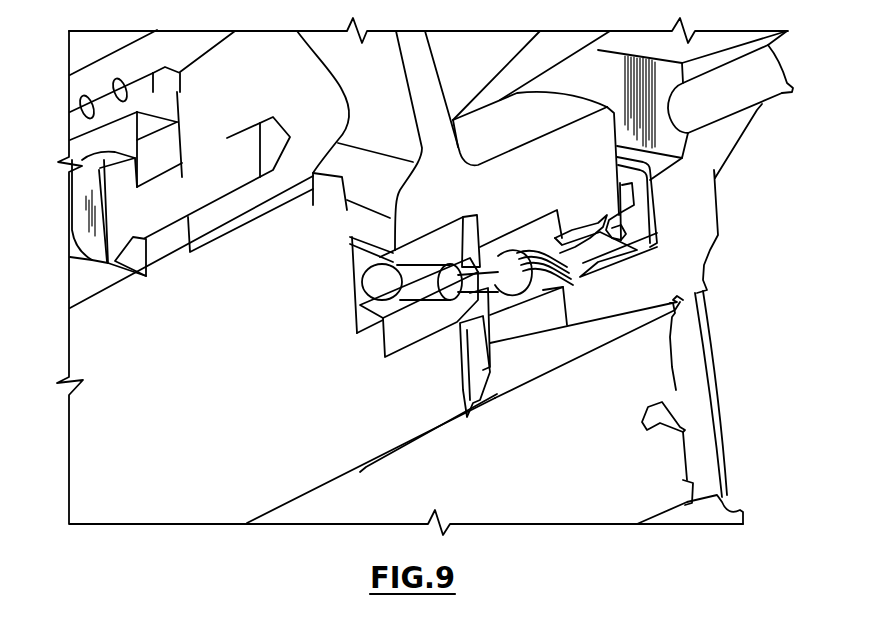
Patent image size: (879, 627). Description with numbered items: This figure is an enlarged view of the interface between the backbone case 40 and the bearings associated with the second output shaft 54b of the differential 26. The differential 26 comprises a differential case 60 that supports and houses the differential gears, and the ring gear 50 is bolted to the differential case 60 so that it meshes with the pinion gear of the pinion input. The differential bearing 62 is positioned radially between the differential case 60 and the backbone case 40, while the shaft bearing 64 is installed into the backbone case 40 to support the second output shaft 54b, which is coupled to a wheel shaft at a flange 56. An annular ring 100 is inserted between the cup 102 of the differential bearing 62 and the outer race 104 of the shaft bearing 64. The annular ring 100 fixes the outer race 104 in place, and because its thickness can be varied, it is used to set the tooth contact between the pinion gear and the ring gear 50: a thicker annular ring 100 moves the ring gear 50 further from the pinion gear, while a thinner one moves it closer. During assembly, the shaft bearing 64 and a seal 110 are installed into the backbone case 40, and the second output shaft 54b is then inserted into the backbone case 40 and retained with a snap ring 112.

The differential 26 is at (405, 276).
The ring gear 50 is at (249, 115).
The backbone case 40 is at (499, 144).
The flange 56 is at (707, 105).
The annular ring 100 is at (470, 215).
The seal 110 is at (635, 236).
The cup 102 is at (365, 281).
The outer race 104 is at (547, 287).
The second output shaft 54b is at (708, 407).
The differential bearing 62 is at (410, 327).
The snap ring 112 is at (443, 352).
The shaft bearing 64 is at (586, 347).
The differential case 60 is at (372, 458).